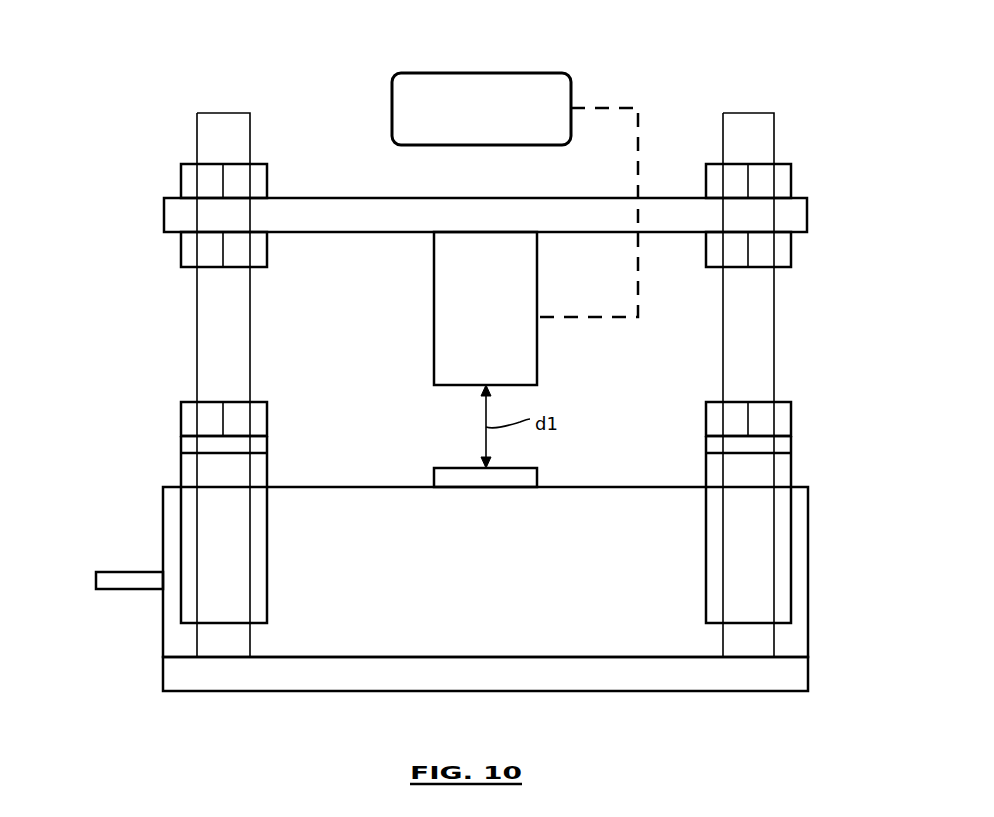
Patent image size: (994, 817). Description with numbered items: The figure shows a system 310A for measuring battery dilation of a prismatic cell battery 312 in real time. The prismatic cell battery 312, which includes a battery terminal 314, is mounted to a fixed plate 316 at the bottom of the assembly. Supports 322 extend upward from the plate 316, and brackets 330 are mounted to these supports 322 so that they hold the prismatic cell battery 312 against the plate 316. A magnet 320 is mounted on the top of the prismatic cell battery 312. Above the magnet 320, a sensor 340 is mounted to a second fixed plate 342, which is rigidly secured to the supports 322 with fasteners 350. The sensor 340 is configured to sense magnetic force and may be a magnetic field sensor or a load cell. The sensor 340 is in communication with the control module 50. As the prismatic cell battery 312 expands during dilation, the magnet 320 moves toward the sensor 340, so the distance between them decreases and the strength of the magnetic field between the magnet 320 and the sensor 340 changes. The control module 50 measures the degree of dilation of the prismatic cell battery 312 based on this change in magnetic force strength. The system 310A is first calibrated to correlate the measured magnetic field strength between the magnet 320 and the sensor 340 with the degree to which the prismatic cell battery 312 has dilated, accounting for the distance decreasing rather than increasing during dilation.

The system for measuring battery dilation 310A is at (258, 63).
The control module 50 is at (470, 73).
The prismatic cell battery 312 is at (672, 605).
The battery terminal 314 is at (130, 589).
The fixed plate 316 is at (300, 673).
The magnet 320 is at (434, 471).
The supports 322 is at (197, 113).
The brackets 330 is at (181, 450).
The sensor 340 is at (434, 285).
The fixed plate 342 is at (372, 198).
The fasteners 350 is at (181, 248).